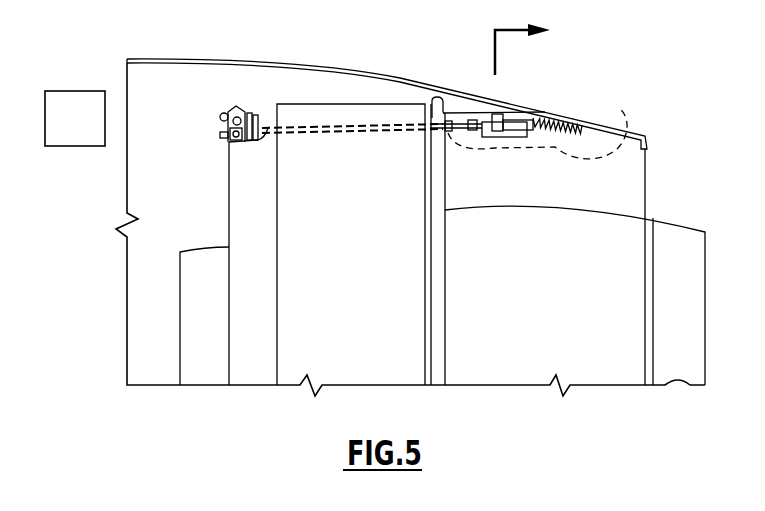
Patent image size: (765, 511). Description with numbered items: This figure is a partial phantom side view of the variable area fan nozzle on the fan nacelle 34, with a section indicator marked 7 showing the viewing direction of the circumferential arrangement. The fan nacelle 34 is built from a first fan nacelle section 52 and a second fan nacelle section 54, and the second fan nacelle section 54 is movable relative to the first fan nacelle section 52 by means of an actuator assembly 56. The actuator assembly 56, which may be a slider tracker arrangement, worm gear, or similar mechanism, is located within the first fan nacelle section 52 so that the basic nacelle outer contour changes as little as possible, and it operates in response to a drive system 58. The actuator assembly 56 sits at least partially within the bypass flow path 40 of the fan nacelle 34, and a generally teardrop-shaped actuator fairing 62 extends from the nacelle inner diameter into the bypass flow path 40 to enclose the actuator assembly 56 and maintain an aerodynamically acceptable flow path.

The section view indicator 7 is at (512, 43).
The fan nacelle 34 is at (266, 50).
The bypass flow path 40 is at (527, 194).
The first fan nacelle section 52 is at (368, 72).
The second fan nacelle section 54 is at (600, 125).
The actuator assembly 56 is at (497, 118).
The drive system 58 is at (220, 118).
The actuator fairing 62 is at (628, 112).